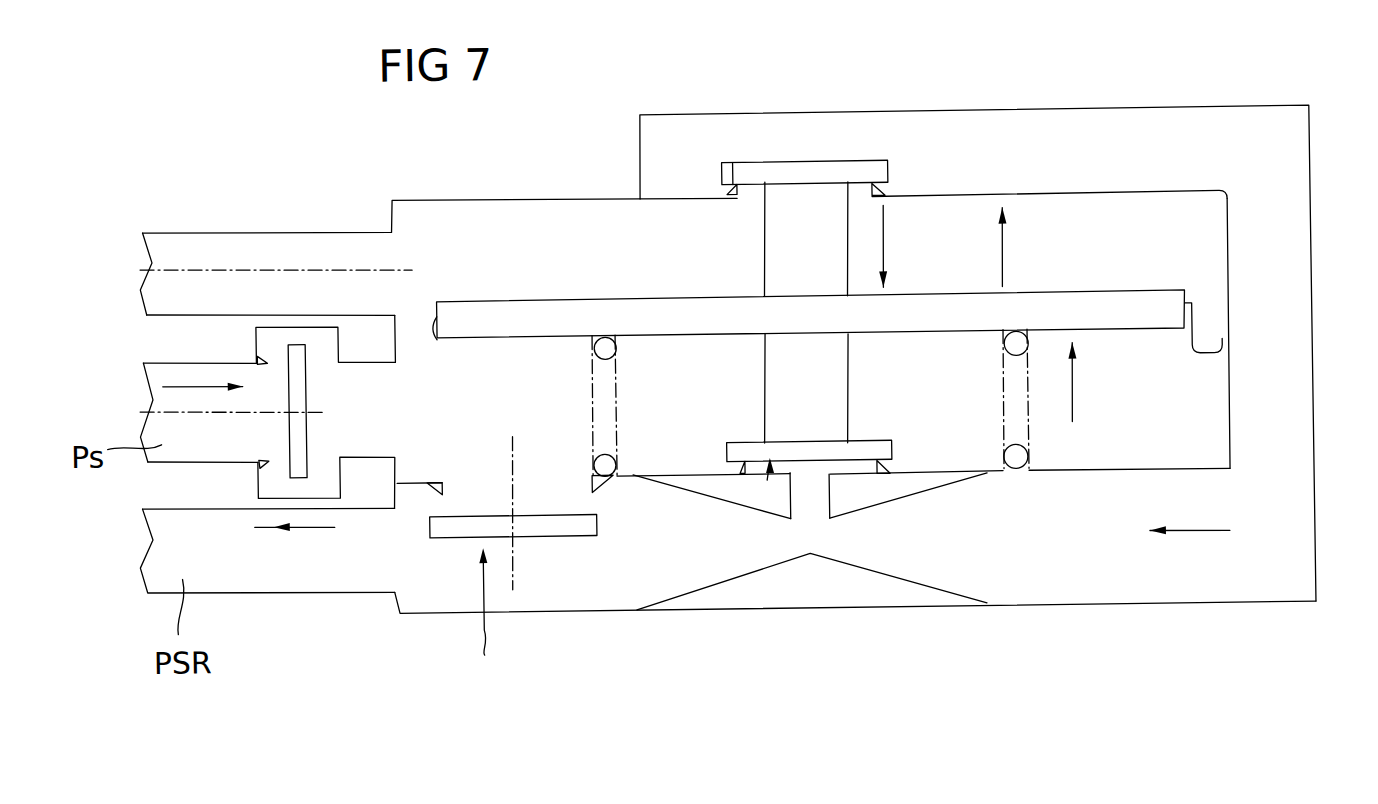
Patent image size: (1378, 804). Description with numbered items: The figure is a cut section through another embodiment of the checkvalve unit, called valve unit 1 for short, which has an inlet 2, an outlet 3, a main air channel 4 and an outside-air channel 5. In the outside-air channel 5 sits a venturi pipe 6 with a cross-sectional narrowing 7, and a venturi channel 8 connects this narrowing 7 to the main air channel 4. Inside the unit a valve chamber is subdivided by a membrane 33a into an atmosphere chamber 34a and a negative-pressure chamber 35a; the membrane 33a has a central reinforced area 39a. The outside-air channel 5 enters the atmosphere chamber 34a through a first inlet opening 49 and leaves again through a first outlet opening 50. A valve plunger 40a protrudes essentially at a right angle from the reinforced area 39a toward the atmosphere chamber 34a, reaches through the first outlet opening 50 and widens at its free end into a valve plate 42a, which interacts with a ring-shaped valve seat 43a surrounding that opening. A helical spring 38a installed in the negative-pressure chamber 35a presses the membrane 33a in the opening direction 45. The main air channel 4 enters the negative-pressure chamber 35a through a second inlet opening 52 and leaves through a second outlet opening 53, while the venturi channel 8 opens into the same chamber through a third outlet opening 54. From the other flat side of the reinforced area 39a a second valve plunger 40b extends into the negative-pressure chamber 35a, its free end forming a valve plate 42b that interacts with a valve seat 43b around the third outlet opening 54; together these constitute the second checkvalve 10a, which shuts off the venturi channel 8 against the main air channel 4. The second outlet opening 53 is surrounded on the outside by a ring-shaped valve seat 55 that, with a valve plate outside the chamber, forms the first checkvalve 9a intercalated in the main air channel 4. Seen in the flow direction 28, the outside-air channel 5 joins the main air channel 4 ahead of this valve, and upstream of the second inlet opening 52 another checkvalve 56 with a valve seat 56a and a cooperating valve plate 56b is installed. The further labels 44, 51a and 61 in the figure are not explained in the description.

The valve unit 1 is at (1240, 633).
The inlet 2 is at (145, 388).
The outlet 3 is at (128, 559).
The main air channel 4 is at (217, 443).
The outside-air channel 5 is at (340, 245).
The venturi pipe 6 is at (877, 595).
The cross-sectional narrowing 7 is at (818, 532).
The venturi channel 8 is at (809, 502).
The first checkvalve 9a is at (486, 621).
The second checkvalve 10a is at (766, 481).
The flow direction 28 is at (177, 379).
The membrane 33a is at (1223, 346).
The atmosphere chamber 34a is at (1093, 214).
The negative-pressure chamber 35a is at (1194, 442).
The helical spring 38a is at (1019, 480).
The reinforced area 39a is at (1141, 306).
The valve plunger 40a is at (782, 248).
The second valve plunger 40b is at (780, 371).
The valve plate 42a is at (828, 175).
The valve plate 42b is at (744, 451).
The valve seat 43a is at (726, 160).
The valve seat 43b is at (737, 471).
The flow direction 44 is at (887, 235).
The opening direction 45 is at (1005, 254).
The first inlet opening 49 is at (390, 250).
The first outlet opening 50 is at (753, 193).
The chamber side wall 51a is at (1201, 222).
The second inlet opening 52 is at (398, 416).
The second outlet opening 53 is at (547, 465).
The third outlet opening 54 is at (829, 454).
The valve seat 55 is at (435, 488).
The checkvalve 56 is at (276, 369).
The valve seat 56a is at (257, 354).
The valve plate 56b is at (296, 387).
The chamber top wall 61 is at (1038, 198).